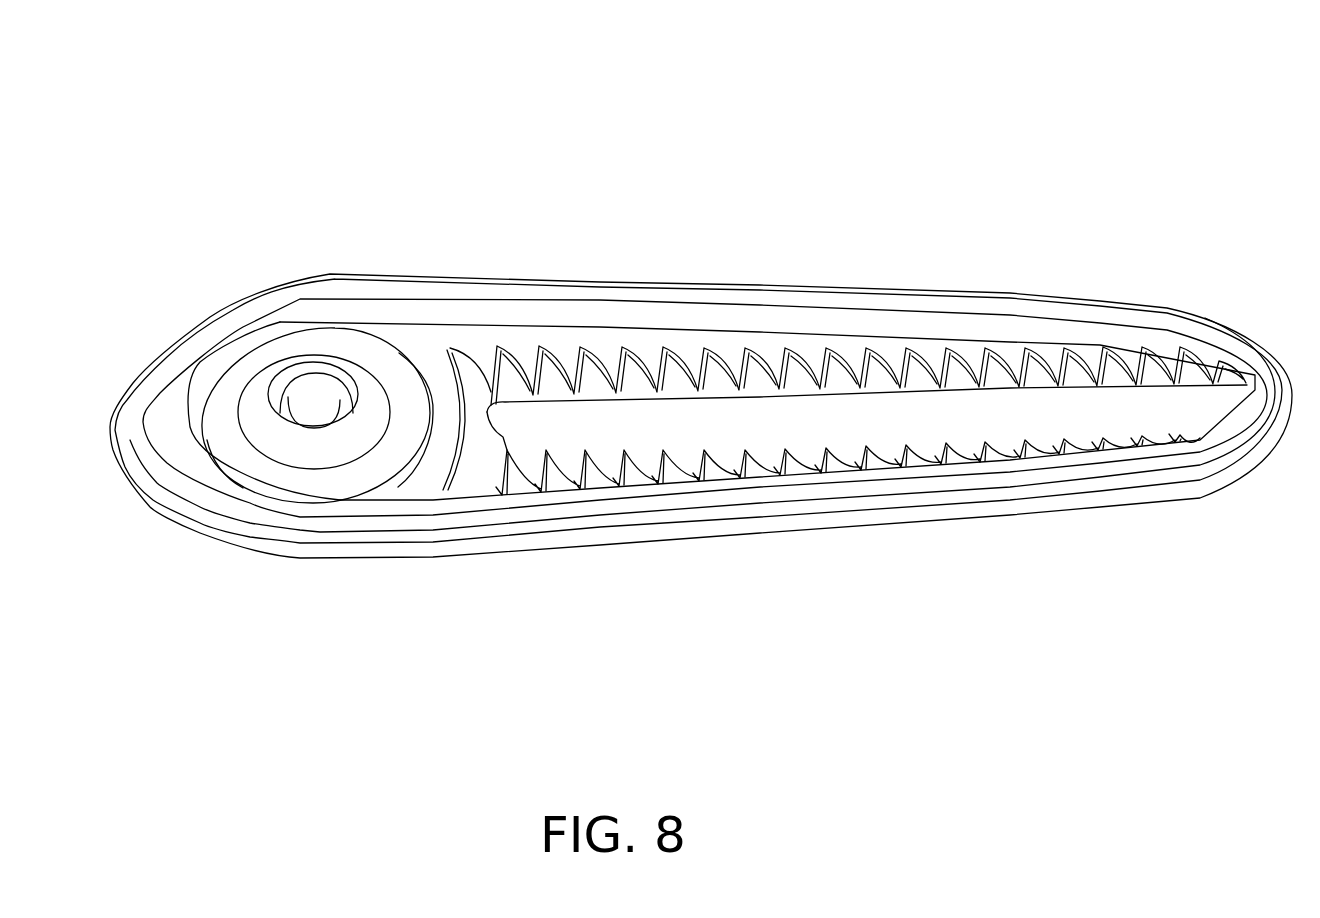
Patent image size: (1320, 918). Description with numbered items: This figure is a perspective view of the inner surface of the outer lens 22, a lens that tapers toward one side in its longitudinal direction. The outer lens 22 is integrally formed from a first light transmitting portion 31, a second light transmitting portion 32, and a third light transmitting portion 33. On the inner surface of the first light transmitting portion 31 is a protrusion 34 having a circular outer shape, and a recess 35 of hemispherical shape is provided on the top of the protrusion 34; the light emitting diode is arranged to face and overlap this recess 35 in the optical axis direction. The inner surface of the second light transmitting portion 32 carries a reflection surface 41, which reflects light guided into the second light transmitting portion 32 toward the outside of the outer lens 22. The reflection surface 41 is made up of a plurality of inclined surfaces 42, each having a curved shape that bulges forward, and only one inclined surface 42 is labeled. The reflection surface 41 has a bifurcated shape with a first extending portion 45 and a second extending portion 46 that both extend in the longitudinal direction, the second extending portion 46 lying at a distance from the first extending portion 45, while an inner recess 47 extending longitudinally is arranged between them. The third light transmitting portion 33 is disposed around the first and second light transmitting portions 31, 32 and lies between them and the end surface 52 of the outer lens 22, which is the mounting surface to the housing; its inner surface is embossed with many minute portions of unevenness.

The outer lens 22 is at (1022, 184).
The first light transmitting portion 31 is at (357, 352).
The second light transmitting portion 32 is at (628, 332).
The third light transmitting portion 33 is at (178, 423).
The protrusion 34 is at (260, 400).
The recess 35 is at (320, 408).
The reflection surface 41 is at (561, 348).
The inclined surface 42 is at (677, 362).
The first extending portion 45 is at (766, 365).
The second extending portion 46 is at (755, 468).
The inner recess 47 is at (920, 420).
The end surface 52 is at (445, 287).